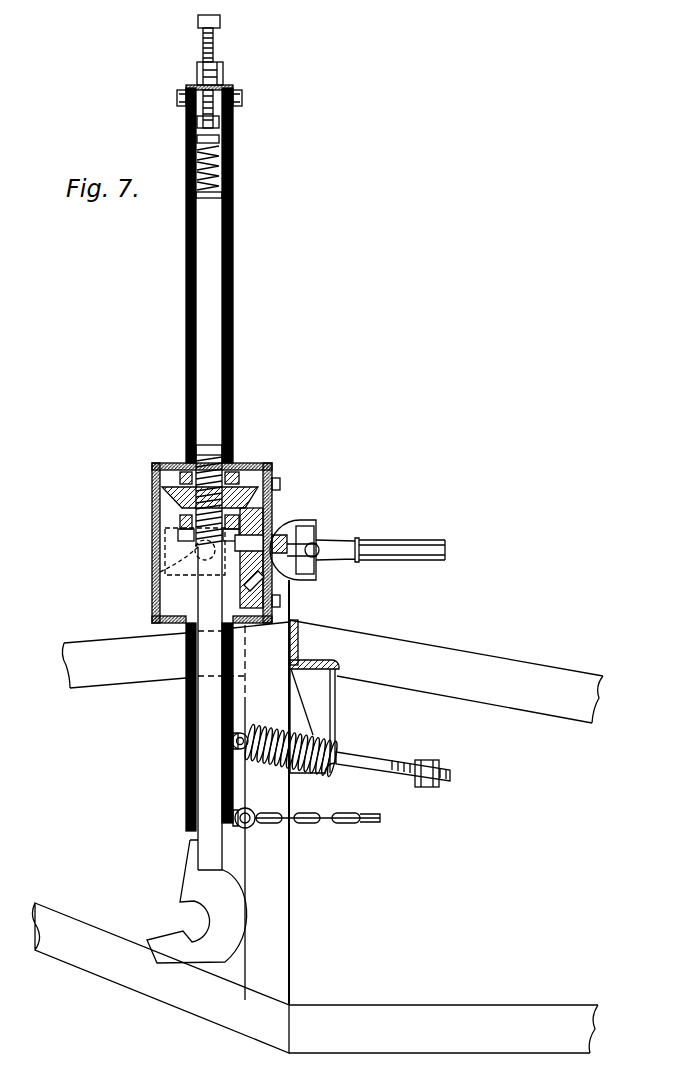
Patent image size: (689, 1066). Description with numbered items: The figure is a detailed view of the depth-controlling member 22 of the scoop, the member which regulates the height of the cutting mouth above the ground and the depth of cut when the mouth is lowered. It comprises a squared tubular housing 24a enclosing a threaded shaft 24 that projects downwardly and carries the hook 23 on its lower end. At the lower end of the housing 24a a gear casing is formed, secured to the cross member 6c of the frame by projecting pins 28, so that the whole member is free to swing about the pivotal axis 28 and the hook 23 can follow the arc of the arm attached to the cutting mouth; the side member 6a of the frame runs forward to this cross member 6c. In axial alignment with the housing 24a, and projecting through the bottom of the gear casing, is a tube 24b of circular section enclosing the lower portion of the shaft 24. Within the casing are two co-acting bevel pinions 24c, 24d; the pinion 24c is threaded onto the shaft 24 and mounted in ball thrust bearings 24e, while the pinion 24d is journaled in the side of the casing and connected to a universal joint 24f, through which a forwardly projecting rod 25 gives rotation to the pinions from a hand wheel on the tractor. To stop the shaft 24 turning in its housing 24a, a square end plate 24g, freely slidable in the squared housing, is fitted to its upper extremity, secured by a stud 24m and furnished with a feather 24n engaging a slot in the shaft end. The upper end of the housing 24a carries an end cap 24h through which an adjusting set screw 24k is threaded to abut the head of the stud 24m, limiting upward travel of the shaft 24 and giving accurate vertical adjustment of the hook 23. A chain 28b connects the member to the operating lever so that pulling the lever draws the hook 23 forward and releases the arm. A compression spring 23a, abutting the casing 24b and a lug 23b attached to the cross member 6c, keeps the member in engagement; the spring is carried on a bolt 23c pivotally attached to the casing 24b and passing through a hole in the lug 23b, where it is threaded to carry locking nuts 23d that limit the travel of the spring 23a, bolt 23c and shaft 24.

The depth-controlling member 22 is at (235, 192).
The threaded shaft 24 is at (206, 445).
The squared tubular housing 24a is at (235, 254).
The tube 24b is at (188, 790).
The bevel pinion 24c is at (255, 482).
The bevel pinion 24d is at (268, 510).
The ball thrust bearings 24e is at (182, 463).
The universal joint 24f is at (315, 526).
The square end plate 24g is at (232, 130).
The end cap 24h is at (226, 90).
The adjusting set screw 24k is at (205, 52).
The stud 24m is at (196, 120).
The feather 24n is at (234, 152).
The forwardly projecting rod 25 is at (416, 540).
The projecting pins 28 is at (180, 574).
The chain 28b is at (362, 822).
The side member 6a is at (474, 666).
The cross member 6c is at (289, 590).
The hook 23 is at (168, 950).
The compression spring 23a is at (318, 744).
The lug 23b is at (318, 681).
The bolt 23c is at (400, 749).
The locking nuts 23d is at (426, 789).